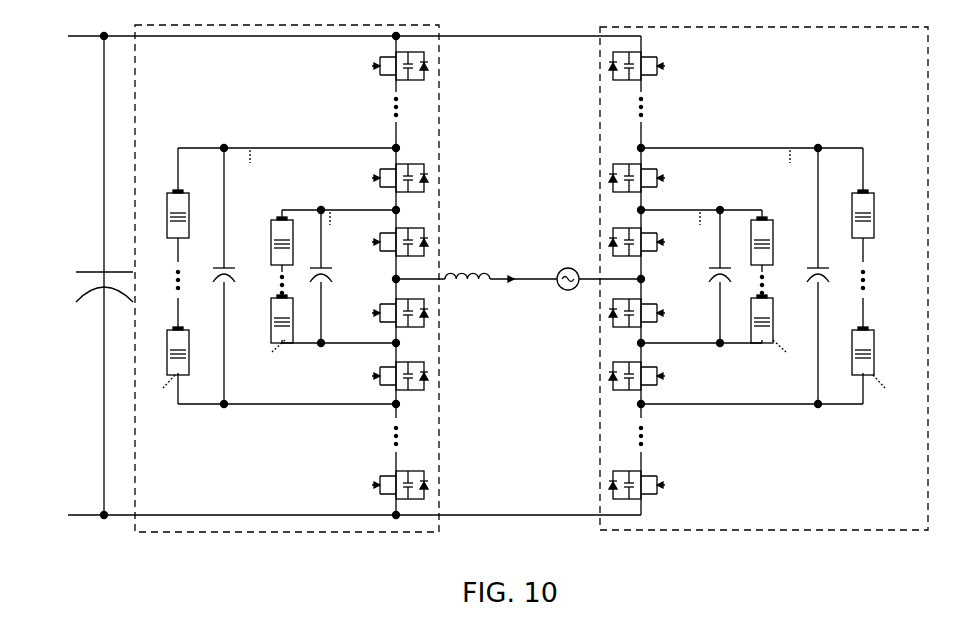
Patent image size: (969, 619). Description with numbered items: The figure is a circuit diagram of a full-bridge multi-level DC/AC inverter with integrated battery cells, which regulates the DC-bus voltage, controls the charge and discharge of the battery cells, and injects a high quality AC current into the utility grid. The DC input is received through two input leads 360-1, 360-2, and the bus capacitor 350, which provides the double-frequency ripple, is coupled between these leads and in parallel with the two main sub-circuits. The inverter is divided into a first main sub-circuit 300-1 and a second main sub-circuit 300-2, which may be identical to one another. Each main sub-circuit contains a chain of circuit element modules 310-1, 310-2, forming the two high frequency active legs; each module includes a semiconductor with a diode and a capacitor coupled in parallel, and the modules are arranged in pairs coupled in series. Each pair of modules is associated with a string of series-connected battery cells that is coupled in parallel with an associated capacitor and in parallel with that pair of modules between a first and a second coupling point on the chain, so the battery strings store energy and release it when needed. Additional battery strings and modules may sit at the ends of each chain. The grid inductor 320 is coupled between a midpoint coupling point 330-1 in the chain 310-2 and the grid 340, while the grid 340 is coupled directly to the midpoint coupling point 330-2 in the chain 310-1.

The input lead 360-1 is at (82, 44).
The input lead 360-2 is at (78, 511).
The bus capacitor 350 is at (66, 321).
The grid 340 is at (551, 269).
The midpoint coupling point 330-1 is at (402, 277).
The midpoint coupling point 330-2 is at (633, 276).
The grid inductor 320 is at (471, 292).
The first main sub-circuit 300-1 is at (711, 278).
The second main sub-circuit 300-2 is at (341, 278).
The chain of circuit element modules 310-1 is at (657, 441).
The chain of circuit element modules 310-2 is at (356, 437).